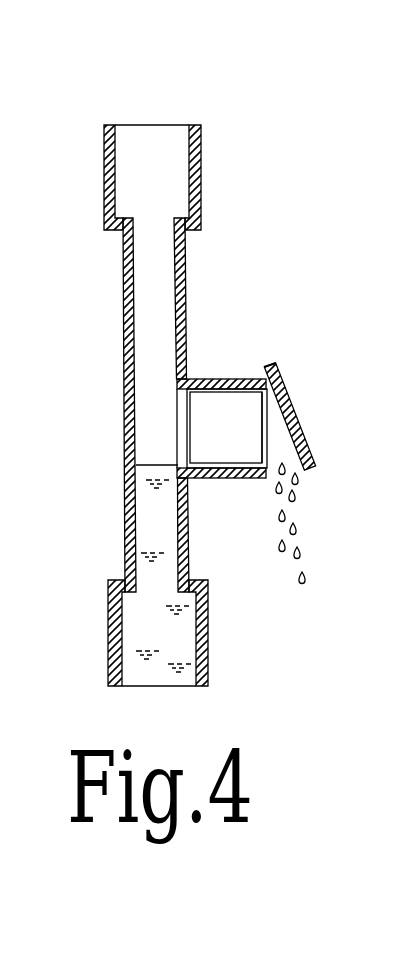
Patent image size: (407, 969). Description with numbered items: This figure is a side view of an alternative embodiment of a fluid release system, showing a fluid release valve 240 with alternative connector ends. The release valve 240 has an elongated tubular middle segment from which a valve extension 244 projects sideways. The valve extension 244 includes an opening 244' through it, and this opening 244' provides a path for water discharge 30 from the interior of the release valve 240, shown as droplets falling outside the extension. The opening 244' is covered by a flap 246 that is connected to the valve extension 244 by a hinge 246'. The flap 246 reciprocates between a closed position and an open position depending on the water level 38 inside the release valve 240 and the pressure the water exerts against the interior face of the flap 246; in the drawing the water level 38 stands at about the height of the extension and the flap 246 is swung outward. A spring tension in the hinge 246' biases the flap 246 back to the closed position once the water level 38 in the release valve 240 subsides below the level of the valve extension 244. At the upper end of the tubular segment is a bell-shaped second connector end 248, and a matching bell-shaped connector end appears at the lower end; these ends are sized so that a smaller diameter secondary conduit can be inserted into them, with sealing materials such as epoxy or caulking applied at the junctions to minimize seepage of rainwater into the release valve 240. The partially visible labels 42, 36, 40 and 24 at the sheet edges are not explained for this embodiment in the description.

The fluid release valve 240 is at (228, 115).
The second connector end 248 is at (104, 173).
The lower coupling / cup 42 is at (108, 634).
The water level 38 is at (139, 432).
The valve extension 244 is at (221, 382).
The opening 244' is at (222, 466).
The flap 246 is at (322, 390).
The hinge 246' is at (306, 314).
The water discharge 30 is at (296, 530).
The drain pipe 36 is at (11, 338).
The drain element 40 is at (9, 505).
The drain element 24 is at (404, 620).